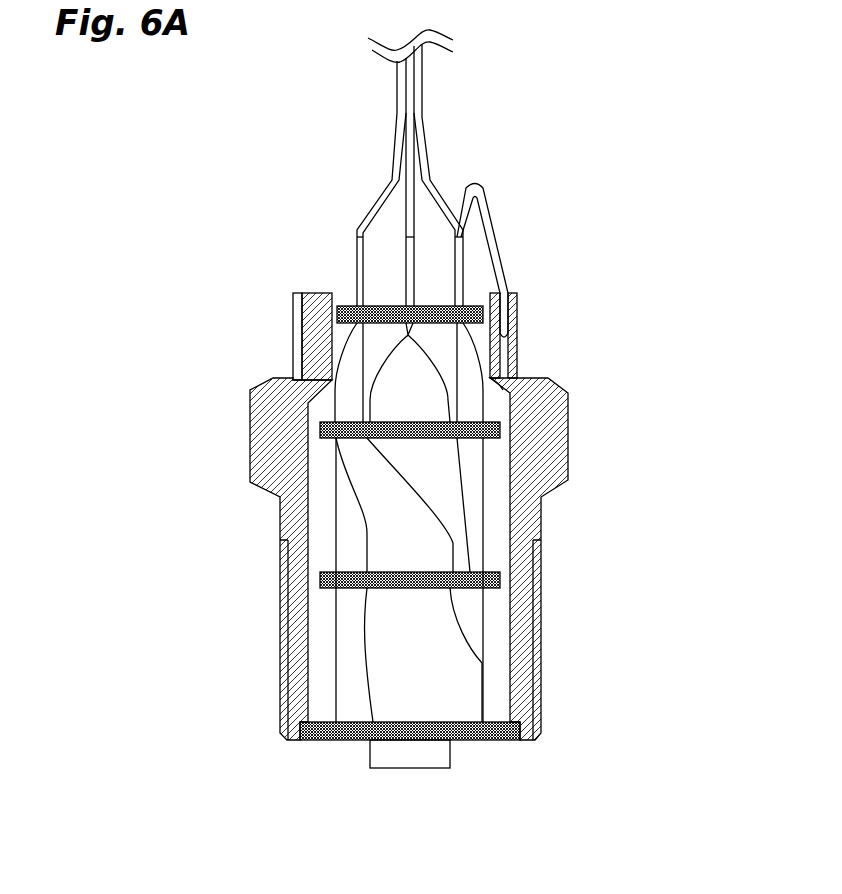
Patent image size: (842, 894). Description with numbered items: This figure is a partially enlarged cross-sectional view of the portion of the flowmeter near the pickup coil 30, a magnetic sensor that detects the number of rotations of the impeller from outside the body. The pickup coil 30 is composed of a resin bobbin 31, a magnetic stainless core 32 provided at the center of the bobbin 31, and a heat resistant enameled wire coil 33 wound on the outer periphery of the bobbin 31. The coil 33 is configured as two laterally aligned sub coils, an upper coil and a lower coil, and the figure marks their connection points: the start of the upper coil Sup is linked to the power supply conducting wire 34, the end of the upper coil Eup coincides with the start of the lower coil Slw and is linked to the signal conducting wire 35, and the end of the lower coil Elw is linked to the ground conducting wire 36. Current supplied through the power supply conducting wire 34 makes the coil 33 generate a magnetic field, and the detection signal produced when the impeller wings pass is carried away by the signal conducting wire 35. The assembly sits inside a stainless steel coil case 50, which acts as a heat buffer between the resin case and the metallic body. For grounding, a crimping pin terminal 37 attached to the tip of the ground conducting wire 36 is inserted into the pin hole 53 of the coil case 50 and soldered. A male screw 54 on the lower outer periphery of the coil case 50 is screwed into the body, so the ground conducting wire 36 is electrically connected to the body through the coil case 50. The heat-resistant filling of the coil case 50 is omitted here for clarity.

The pickup coil 30 is at (628, 123).
The bobbin 31 is at (303, 312).
The magnetic stainless core 32 is at (410, 770).
The coil 33 is at (332, 353).
The power supply conducting wire 34 is at (357, 287).
The signal conducting wire 35 is at (405, 257).
The ground conducting wire 36 is at (463, 270).
The crimping pin terminal 37 is at (510, 302).
The coil case 50 is at (250, 422).
The pin hole 53 is at (517, 347).
The male screw 54 is at (278, 670).
The start of the upper coil Sup is at (333, 441).
The end of the upper coil Eup is at (363, 440).
The end of the lower coil Elw is at (492, 441).
The start of the lower coil Slw is at (461, 440).